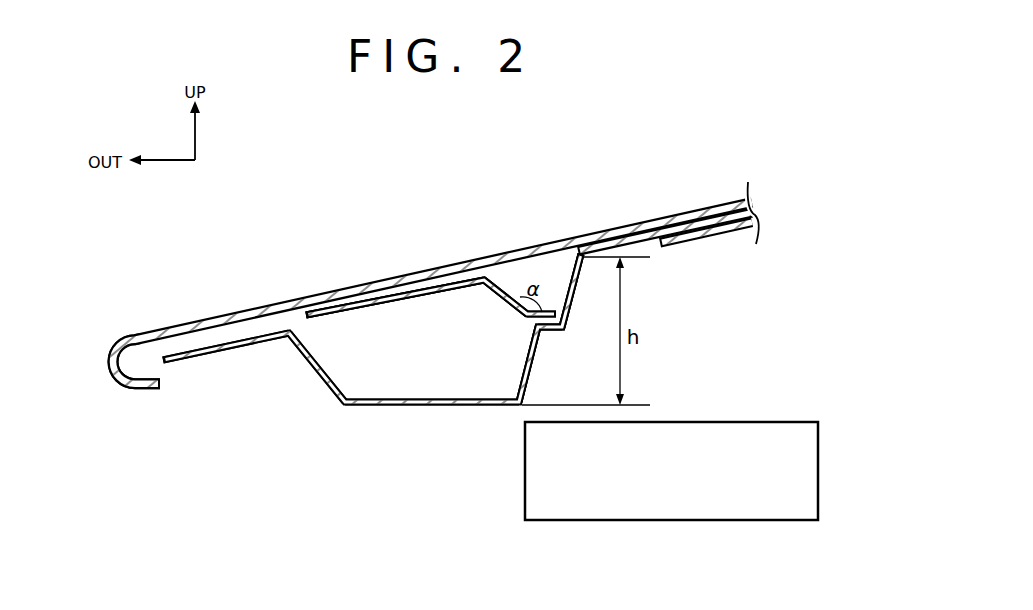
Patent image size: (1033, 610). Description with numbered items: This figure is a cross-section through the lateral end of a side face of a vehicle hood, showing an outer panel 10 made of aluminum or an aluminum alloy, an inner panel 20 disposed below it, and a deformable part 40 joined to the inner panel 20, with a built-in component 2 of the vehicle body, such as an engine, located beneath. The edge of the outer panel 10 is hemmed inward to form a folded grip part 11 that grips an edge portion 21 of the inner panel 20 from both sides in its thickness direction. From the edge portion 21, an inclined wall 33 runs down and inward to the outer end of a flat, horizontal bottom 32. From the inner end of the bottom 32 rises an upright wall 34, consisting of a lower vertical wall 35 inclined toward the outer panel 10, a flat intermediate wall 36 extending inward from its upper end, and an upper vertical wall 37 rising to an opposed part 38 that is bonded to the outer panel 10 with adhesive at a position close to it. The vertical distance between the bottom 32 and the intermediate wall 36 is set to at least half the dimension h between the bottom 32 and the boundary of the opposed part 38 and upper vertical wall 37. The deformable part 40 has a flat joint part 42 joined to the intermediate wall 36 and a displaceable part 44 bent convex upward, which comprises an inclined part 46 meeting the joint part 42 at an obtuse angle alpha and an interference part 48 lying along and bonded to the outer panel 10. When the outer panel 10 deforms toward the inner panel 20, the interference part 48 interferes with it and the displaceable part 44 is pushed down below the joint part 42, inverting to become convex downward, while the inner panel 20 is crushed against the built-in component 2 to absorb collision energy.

The built-in component 2 is at (675, 522).
The outer panel 10 is at (400, 263).
The folded grip part 11 is at (106, 370).
The inner panel 20 is at (466, 356).
The edge portion 21 is at (193, 359).
The bottom 32 is at (417, 405).
The inclined wall 33 is at (314, 370).
The upright wall 34 is at (644, 328).
The lower vertical wall 35 is at (530, 375).
The intermediate wall 36 is at (562, 332).
The upper vertical wall 37 is at (577, 291).
The opposed part 38 is at (697, 240).
The deformable part 40 is at (435, 224).
The joint part 42 is at (553, 310).
The displaceable part 44 is at (416, 241).
The inclined part 46 is at (499, 259).
The interference part 48 is at (406, 291).